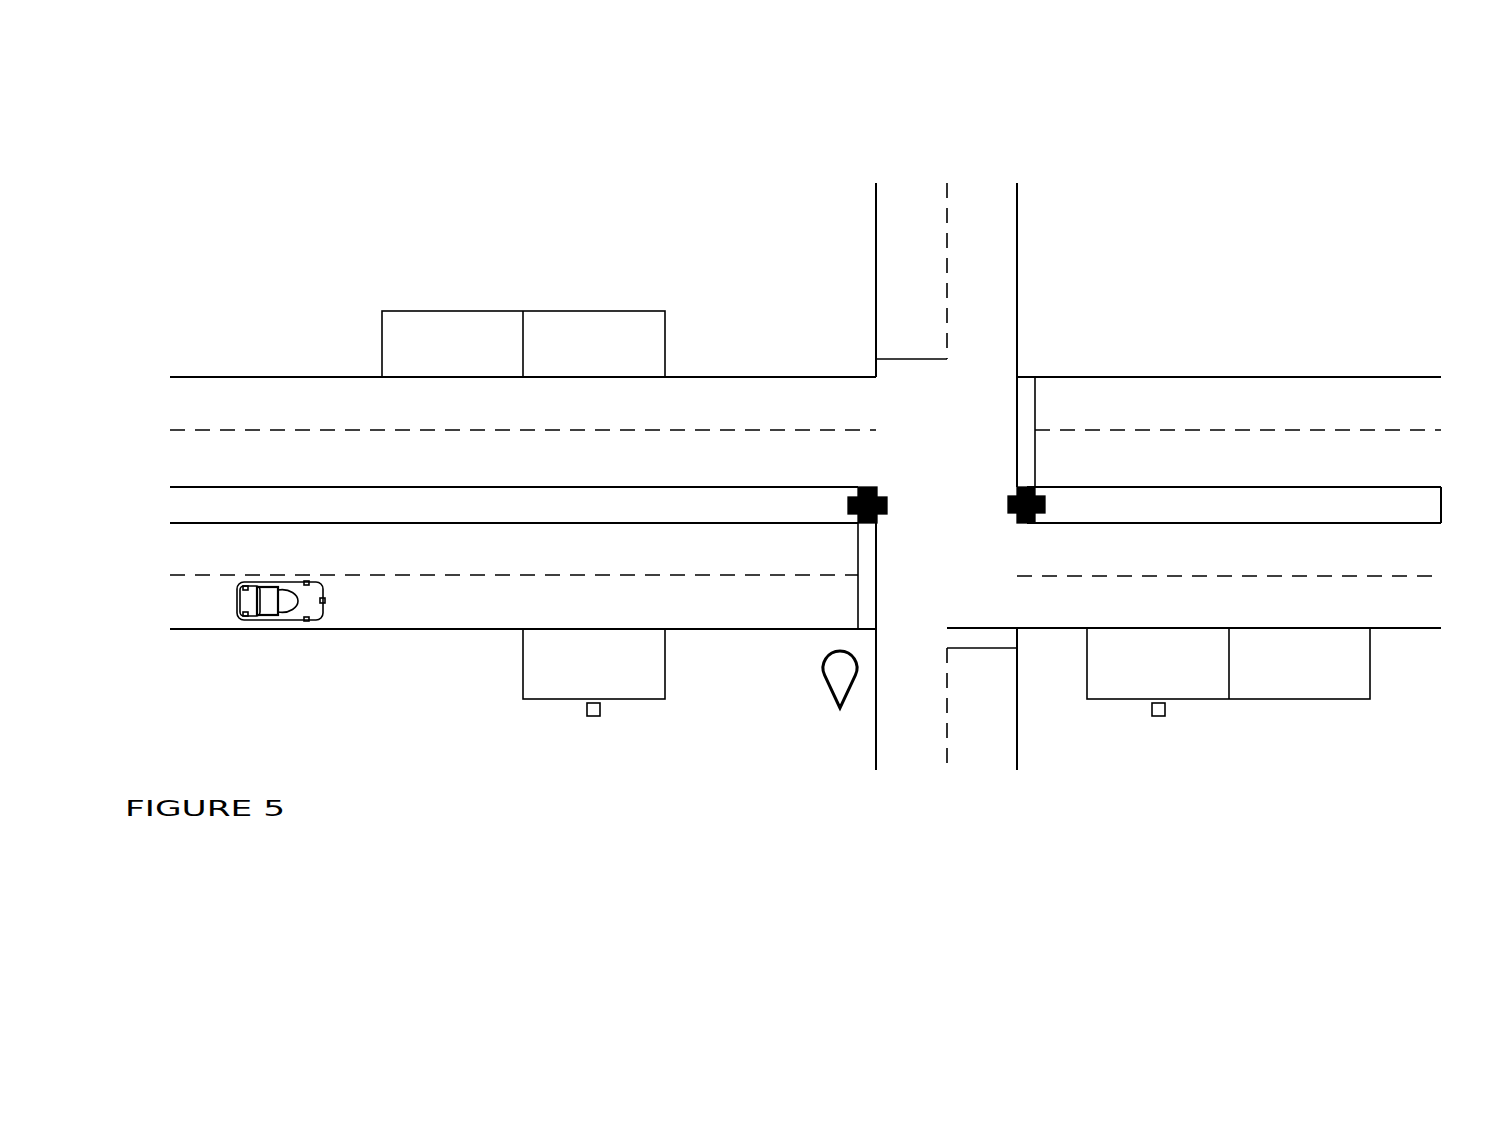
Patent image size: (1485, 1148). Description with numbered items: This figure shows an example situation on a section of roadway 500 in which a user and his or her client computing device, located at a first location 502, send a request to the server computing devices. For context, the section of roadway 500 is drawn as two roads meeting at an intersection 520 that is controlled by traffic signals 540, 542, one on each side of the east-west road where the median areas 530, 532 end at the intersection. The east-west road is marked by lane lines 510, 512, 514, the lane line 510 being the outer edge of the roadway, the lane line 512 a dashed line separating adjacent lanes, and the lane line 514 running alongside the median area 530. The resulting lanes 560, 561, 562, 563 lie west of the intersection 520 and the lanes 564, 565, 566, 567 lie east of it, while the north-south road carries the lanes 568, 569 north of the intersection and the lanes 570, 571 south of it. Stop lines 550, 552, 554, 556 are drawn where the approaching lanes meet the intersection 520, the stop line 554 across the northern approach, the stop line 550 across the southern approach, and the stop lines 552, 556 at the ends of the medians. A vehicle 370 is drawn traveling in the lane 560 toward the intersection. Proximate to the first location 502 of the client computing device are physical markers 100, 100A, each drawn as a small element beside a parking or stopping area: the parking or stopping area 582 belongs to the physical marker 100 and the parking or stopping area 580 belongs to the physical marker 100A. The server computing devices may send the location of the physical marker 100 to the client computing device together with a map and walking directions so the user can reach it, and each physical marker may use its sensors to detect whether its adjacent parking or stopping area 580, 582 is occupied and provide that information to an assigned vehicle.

The section of roadway 500 is at (226, 762).
The lane line 510 is at (197, 629).
The lane line 512 is at (427, 575).
The lane line 514 is at (372, 523).
The intersection 520 is at (946, 503).
The median area 530 is at (363, 505).
The median area 532 is at (1317, 507).
The traffic signal 540 is at (850, 496).
The traffic signal 542 is at (1007, 503).
The stop line 550 is at (982, 650).
The stop line 552 is at (877, 588).
The stop line 554 is at (876, 365).
The stop line 556 is at (1027, 377).
The lane 560 is at (514, 602).
The lane 561 is at (514, 549).
The lane 562 is at (523, 451).
The lane 563 is at (523, 404).
The lane 564 is at (1229, 595).
The lane 565 is at (1238, 549).
The lane 566 is at (1238, 451).
The lane 567 is at (1238, 403).
The lane 568 is at (982, 280).
The lane 569 is at (911, 271).
The lane 570 is at (911, 699).
The lane 571 is at (982, 700).
The parking or stopping area 580 is at (594, 664).
The parking or stopping area 582 is at (1228, 663).
The physical marker 100 is at (1152, 707).
The physical marker 100A is at (587, 707).
The first location 502 is at (823, 682).
The vehicle sensor 370 is at (307, 583).